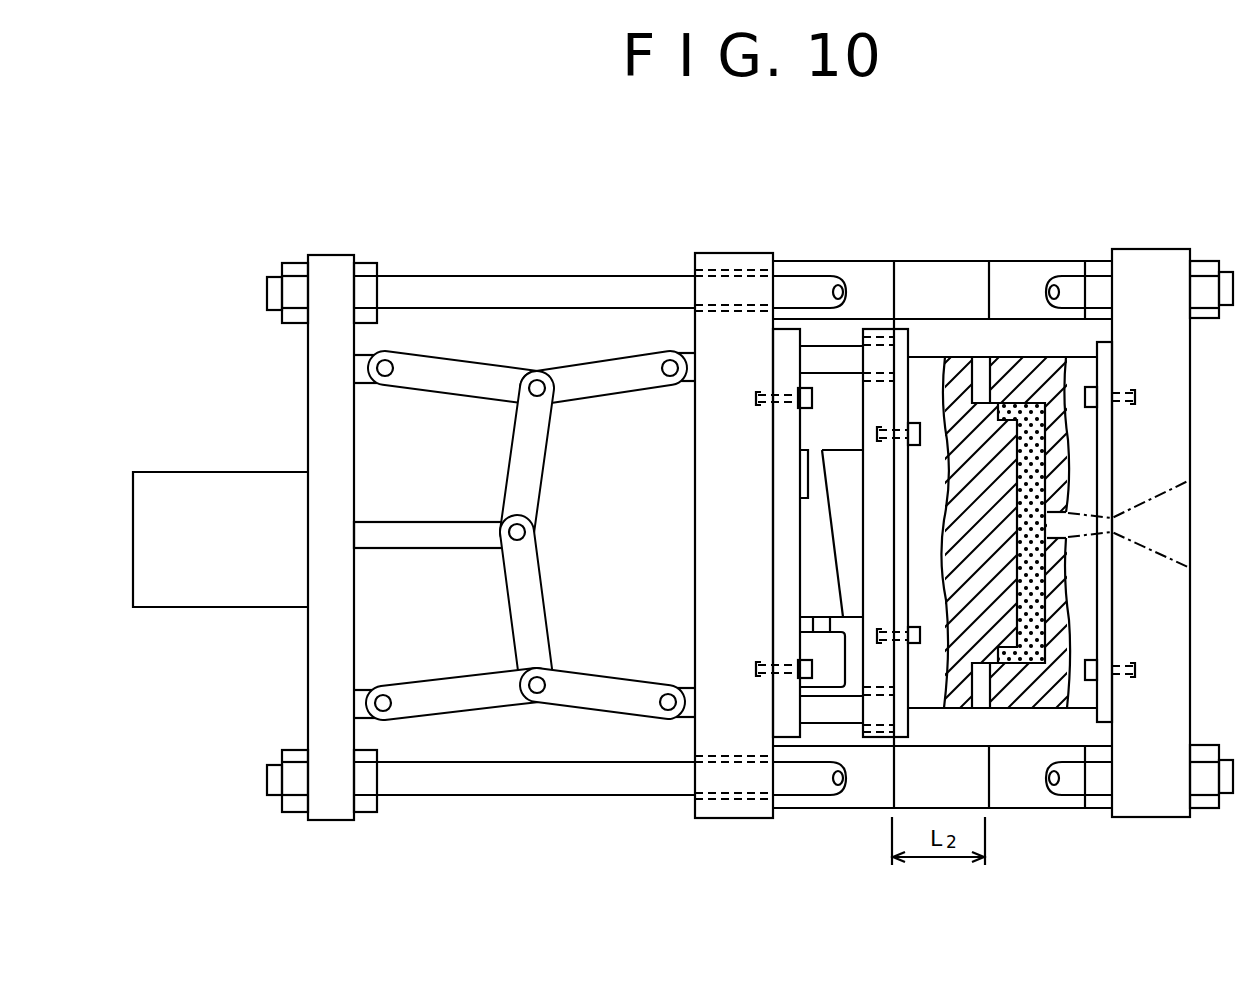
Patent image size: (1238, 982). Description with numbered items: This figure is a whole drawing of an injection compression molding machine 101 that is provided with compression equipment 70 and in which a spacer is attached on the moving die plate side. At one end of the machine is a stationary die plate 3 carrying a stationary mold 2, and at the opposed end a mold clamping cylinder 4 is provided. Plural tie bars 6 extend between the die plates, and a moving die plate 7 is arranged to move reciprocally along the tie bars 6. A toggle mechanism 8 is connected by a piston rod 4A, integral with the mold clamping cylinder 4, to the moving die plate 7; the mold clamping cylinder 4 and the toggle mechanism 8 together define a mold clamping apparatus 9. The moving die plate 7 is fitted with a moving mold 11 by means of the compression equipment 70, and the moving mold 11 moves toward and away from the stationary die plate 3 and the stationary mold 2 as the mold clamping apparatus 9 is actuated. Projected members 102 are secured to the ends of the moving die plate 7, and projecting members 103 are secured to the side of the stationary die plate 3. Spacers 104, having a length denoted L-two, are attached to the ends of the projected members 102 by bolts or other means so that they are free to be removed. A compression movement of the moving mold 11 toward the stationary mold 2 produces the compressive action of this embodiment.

The stationary mold 2 is at (1033, 360).
The stationary die plate 3 is at (1160, 260).
The mold clamping cylinder 4 is at (176, 472).
The piston rod 4A is at (432, 536).
The tie bars 6 is at (586, 290).
The moving die plate 7 is at (706, 252).
The toggle mechanism 8 is at (457, 368).
The mold clamping apparatus 9 is at (435, 705).
The moving mold 11 is at (922, 368).
The compression equipment 70 is at (842, 357).
The injection compression molding machine 101 is at (941, 520).
The projected members 102 is at (790, 260).
The projecting members 103 is at (1063, 258).
The spacers 104 is at (968, 272).